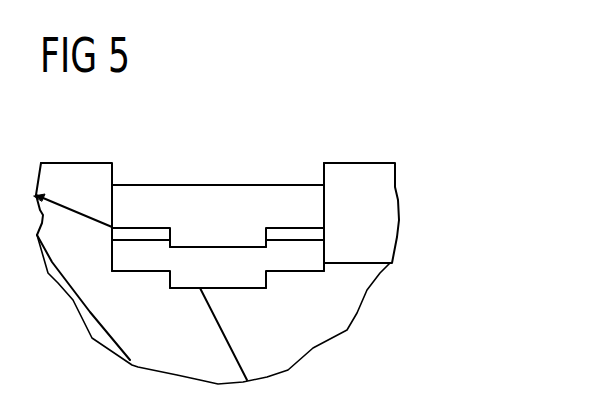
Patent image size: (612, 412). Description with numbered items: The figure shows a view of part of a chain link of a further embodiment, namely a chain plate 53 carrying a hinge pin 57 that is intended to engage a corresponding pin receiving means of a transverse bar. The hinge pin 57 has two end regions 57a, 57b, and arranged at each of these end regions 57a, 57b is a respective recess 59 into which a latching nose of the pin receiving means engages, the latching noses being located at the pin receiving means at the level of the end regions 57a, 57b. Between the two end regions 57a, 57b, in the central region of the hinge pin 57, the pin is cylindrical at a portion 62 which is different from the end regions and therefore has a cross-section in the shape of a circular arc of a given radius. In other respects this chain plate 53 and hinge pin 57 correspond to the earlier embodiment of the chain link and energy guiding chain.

The chain plate 53 is at (133, 338).
The hinge pin 57 is at (223, 197).
The end region of the hinge pin 57a is at (308, 197).
The end region of the hinge pin 57b is at (137, 197).
The recess 59 is at (130, 243).
The cylindrical portion 62 is at (186, 237).